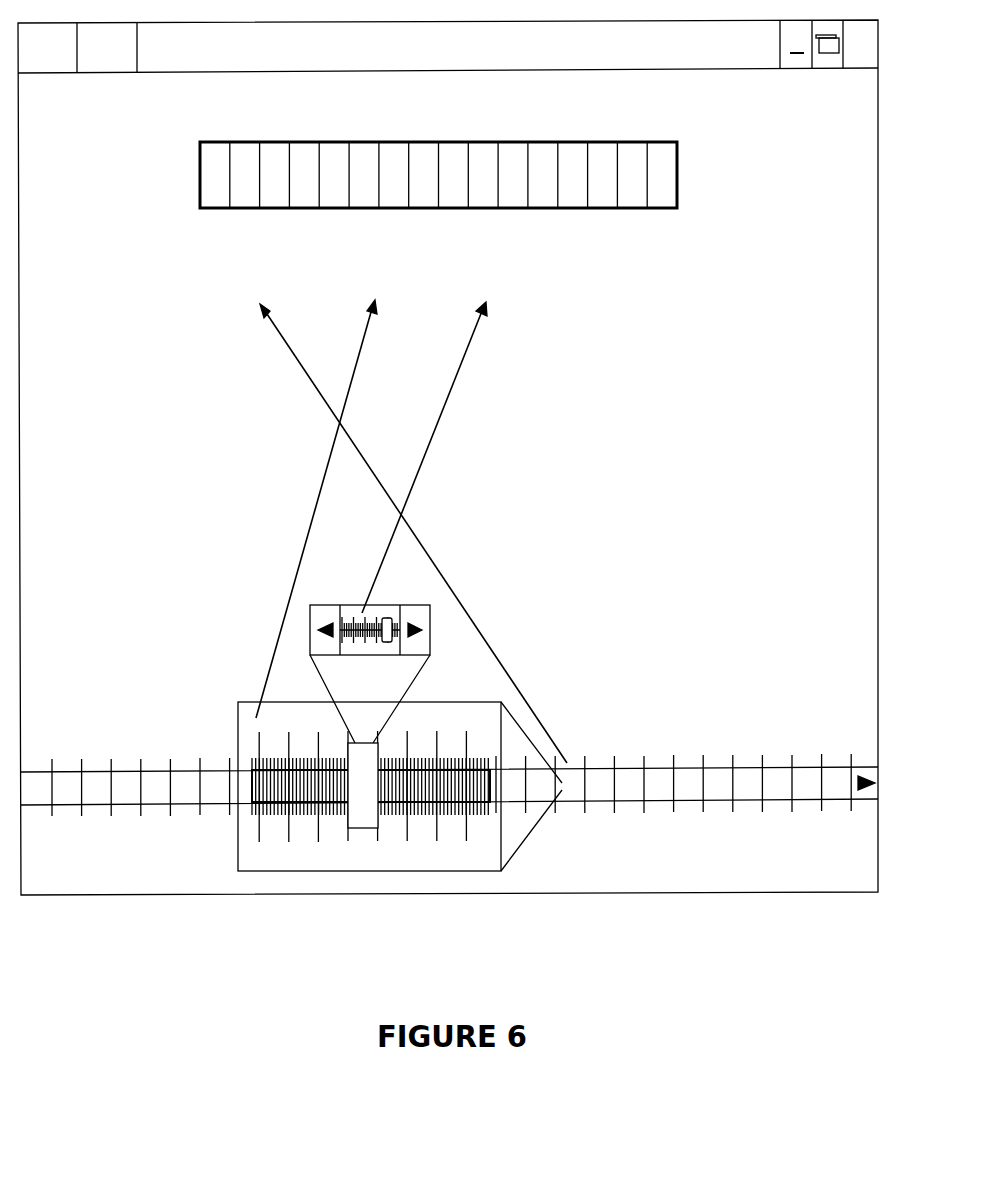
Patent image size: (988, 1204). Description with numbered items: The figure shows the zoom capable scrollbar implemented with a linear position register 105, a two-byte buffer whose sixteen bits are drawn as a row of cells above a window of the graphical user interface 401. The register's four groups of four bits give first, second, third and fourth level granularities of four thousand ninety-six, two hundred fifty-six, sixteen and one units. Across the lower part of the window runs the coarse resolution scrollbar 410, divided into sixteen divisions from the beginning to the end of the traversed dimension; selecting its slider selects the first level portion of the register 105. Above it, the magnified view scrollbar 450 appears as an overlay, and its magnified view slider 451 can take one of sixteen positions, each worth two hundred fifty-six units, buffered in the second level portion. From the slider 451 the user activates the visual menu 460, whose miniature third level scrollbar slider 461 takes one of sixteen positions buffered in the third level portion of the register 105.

The linear position register 105 is at (438, 223).
The graphical user interface 401 is at (468, 497).
The coarse resolution scrollbar 410 is at (152, 772).
The magnified view scrollbar 450 is at (467, 700).
The magnified view slider 451 is at (354, 743).
The visual menu 460 is at (362, 613).
The third level scrollbar slider 461 is at (388, 617).